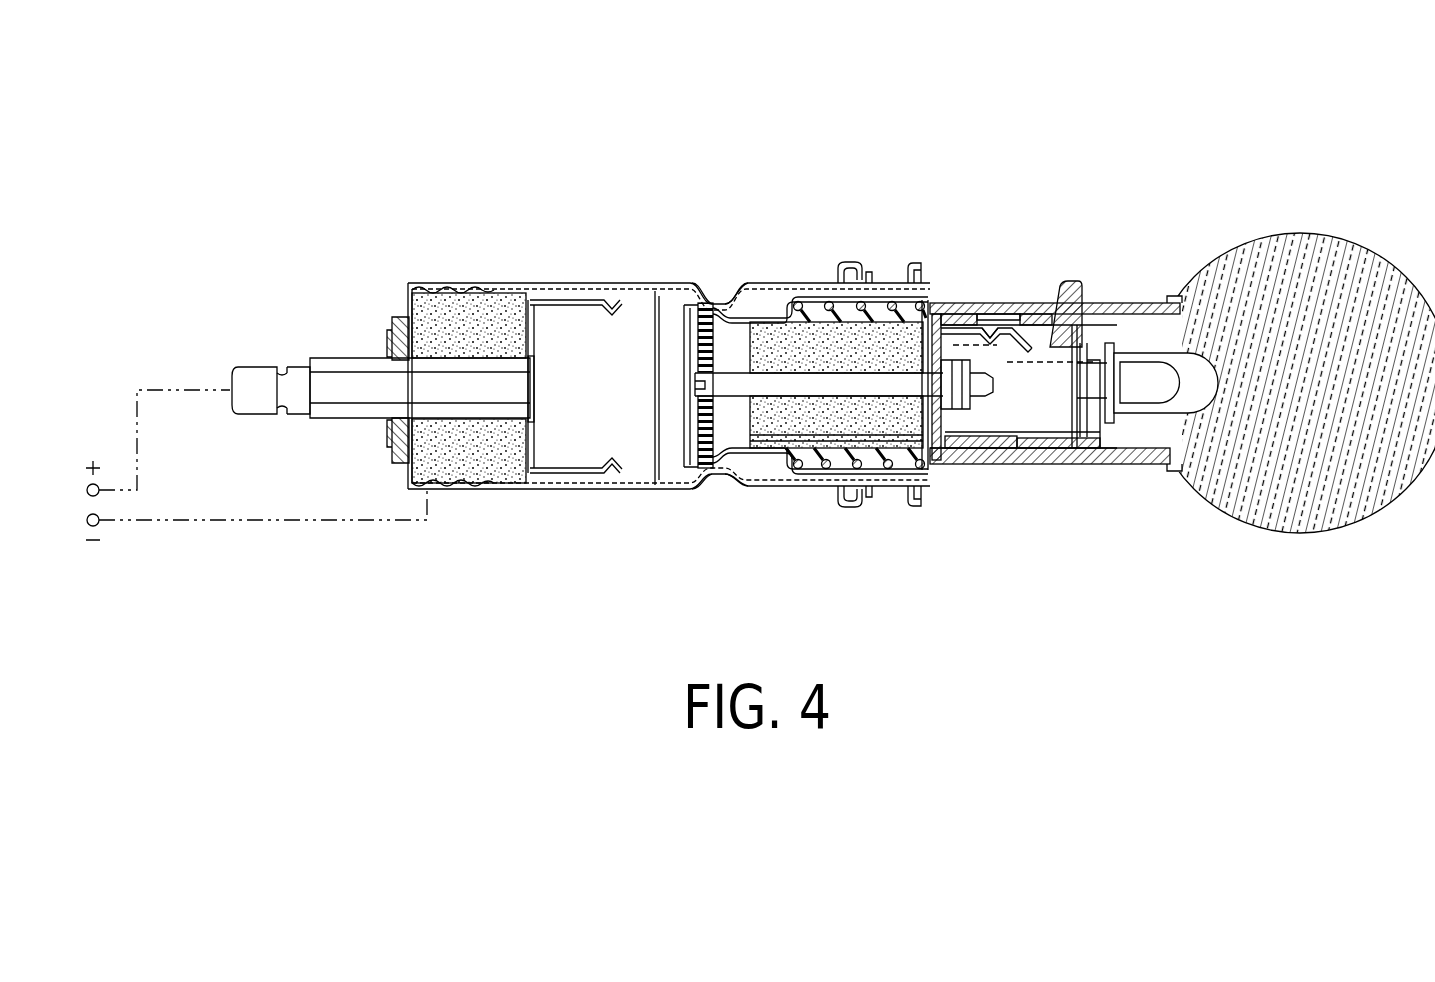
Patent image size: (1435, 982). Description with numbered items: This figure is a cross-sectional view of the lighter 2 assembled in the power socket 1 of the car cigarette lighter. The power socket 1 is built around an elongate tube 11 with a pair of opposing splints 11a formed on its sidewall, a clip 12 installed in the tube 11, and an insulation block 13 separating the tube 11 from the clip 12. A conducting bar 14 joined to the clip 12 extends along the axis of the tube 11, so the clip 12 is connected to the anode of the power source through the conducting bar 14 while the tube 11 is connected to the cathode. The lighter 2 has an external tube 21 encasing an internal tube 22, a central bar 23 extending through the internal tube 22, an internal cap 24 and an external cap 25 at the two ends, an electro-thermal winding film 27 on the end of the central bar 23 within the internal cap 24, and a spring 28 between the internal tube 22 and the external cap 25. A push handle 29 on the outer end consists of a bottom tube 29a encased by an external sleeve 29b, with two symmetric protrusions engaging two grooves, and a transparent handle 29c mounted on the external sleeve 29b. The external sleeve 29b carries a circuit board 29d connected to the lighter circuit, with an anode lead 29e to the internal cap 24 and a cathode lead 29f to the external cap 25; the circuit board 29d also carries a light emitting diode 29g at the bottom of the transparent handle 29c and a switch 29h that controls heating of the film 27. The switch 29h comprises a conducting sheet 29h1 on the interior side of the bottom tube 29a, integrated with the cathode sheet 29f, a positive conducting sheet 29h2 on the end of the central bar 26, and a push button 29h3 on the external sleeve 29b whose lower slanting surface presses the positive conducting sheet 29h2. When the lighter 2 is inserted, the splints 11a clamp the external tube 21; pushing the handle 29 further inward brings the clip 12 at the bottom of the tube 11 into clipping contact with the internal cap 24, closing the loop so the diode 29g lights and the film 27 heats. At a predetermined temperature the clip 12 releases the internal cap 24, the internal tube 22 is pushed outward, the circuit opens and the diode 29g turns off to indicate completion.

The power socket 1 is at (445, 248).
The lighter 2 is at (1232, 235).
The elongate tube 11 is at (837, 277).
The opposing splints 11a is at (712, 283).
The clip 12 is at (555, 318).
The insulation block 13 is at (465, 325).
The conducting bar 14 is at (356, 380).
The external tube 21 is at (778, 316).
The internal tube 22 is at (890, 297).
The central bar 23 is at (783, 445).
The internal cap 24 is at (690, 305).
The external cap 25 is at (928, 277).
The central bar 26 is at (752, 478).
The electro-thermal winding film 27 is at (698, 438).
The spring 28 is at (820, 284).
The push handle 29 is at (828, 593).
The bottom tube 29a is at (978, 450).
The external sleeve 29b is at (1043, 467).
The transparent handle 29c is at (1262, 488).
The circuit board 29d is at (1096, 448).
The anode lead 29e is at (878, 468).
The cathode lead 29f is at (1072, 340).
The light emitting diode 29g is at (1145, 396).
The switch 29h is at (1108, 282).
The conducting sheet 29h1 is at (990, 322).
The positive conducting sheet 29h2 is at (984, 334).
The push button 29h3 is at (1077, 281).